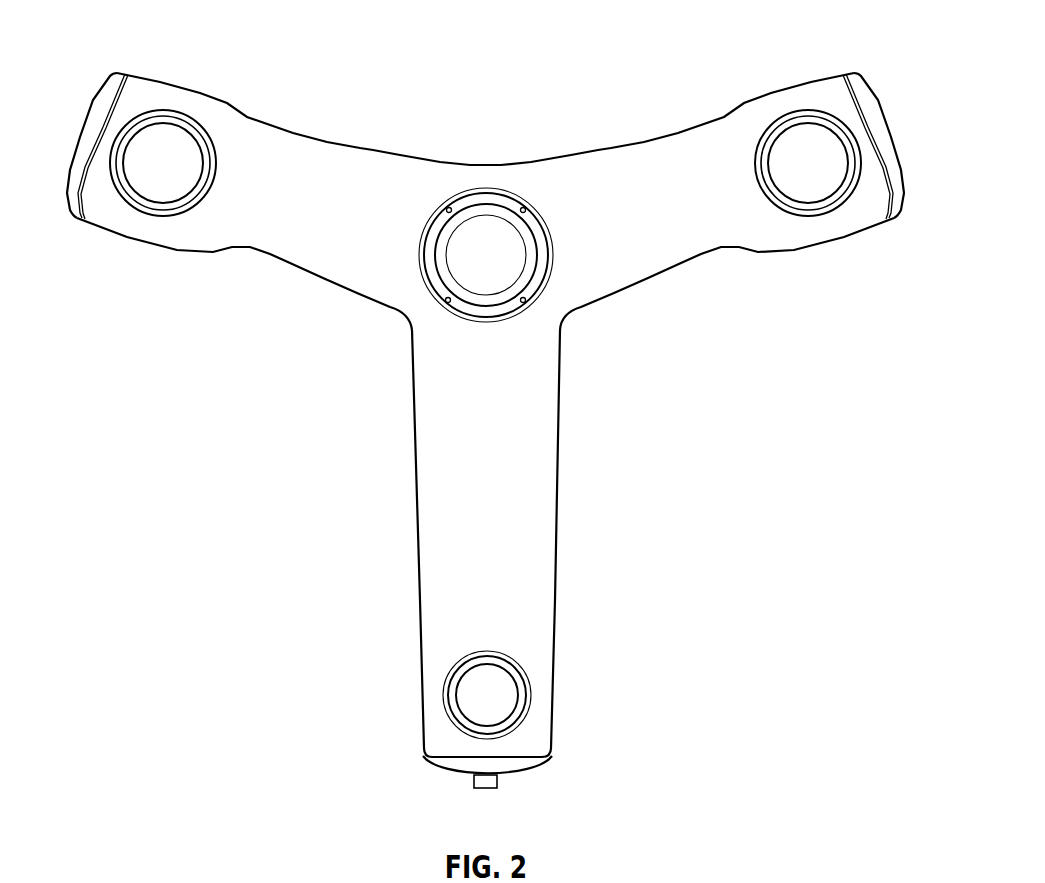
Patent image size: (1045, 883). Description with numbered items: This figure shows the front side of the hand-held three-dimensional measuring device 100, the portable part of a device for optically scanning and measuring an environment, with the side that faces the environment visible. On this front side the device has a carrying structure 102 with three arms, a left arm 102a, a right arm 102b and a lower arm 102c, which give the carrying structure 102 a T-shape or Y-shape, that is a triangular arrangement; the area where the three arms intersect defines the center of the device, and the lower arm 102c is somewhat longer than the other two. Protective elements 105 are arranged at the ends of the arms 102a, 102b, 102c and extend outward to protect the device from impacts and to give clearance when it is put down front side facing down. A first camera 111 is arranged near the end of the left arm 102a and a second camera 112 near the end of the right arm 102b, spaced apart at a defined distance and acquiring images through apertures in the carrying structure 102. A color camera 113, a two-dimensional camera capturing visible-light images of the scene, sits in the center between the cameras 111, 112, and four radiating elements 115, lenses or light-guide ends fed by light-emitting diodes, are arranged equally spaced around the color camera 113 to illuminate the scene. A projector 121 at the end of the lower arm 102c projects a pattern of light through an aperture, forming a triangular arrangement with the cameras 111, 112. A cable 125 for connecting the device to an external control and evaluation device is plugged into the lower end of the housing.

The 3D measuring device 100 is at (385, 530).
The carrying structure 102 is at (557, 497).
The left arm 102a is at (742, 238).
The right arm 102b is at (233, 237).
The lower arm 102c is at (430, 605).
The protective elements 105 is at (95, 90).
The first camera 111 is at (808, 160).
The second camera 112 is at (160, 165).
The color camera 113 is at (488, 256).
The radiating element 115 is at (450, 208).
The projector 121 is at (488, 693).
The cable 125 is at (490, 782).